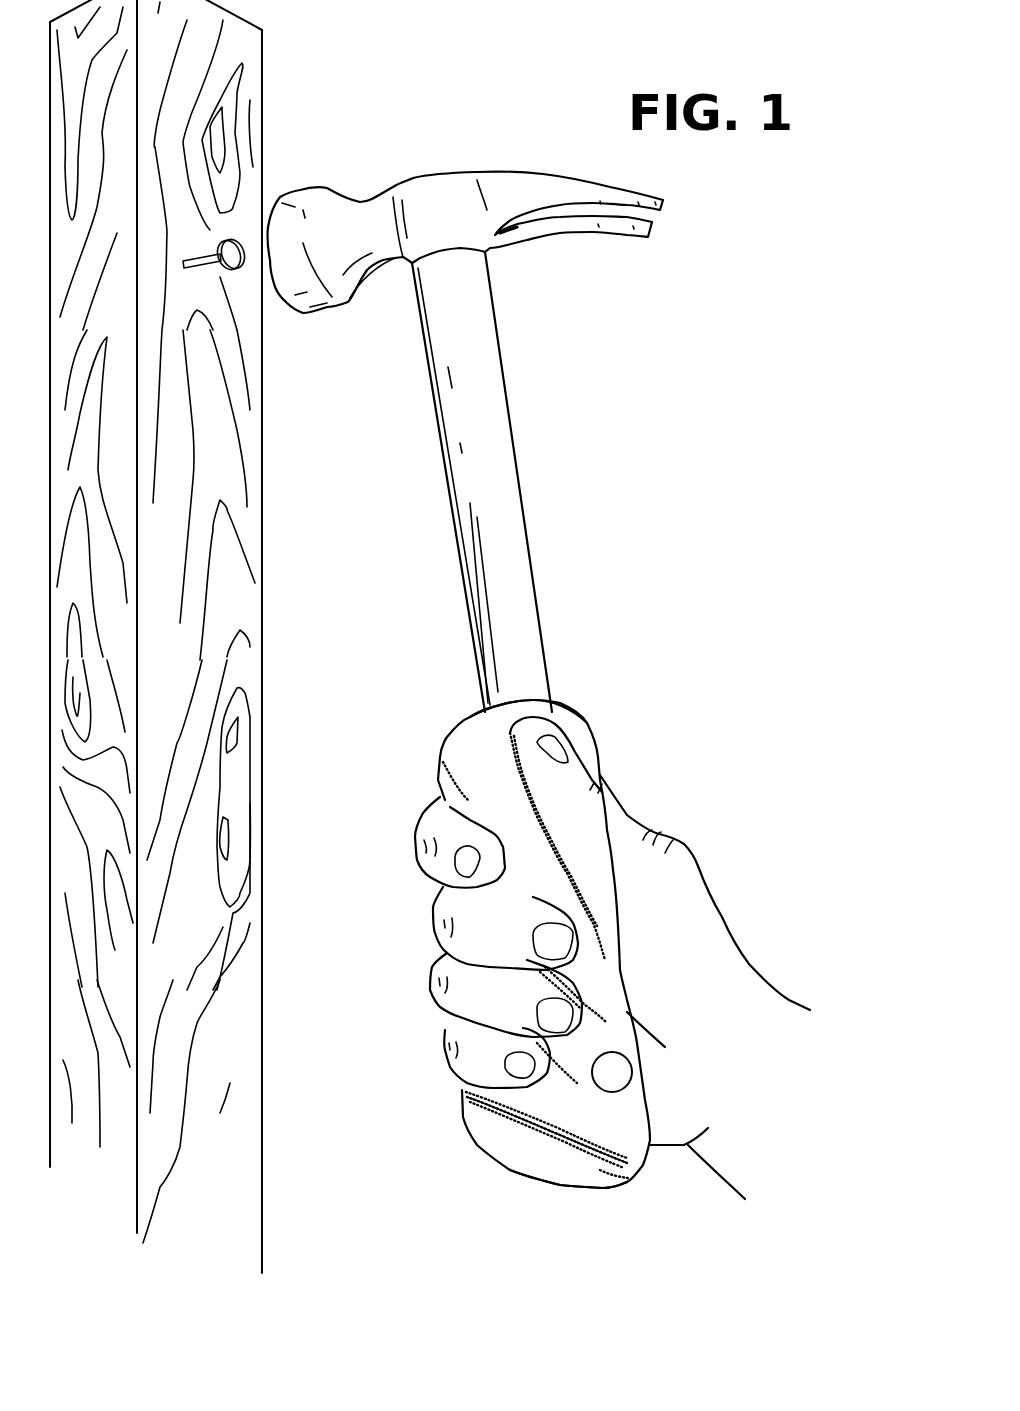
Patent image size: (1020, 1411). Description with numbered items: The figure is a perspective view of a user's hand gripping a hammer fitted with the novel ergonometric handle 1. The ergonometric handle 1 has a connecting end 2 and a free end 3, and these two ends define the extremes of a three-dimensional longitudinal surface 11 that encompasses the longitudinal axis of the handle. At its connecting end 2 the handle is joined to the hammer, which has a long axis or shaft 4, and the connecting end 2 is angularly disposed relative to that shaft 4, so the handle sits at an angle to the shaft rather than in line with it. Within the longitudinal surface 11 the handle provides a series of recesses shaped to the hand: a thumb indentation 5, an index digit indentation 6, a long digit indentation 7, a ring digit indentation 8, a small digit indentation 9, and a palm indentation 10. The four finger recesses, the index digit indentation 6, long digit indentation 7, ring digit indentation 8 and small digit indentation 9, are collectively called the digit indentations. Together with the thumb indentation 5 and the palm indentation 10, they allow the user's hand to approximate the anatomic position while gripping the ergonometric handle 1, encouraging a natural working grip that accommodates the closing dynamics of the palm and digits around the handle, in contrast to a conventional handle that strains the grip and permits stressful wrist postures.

The ergonometric handle 1 is at (437, 742).
The connecting end 2 is at (574, 698).
The free end 3 is at (609, 1189).
The shaft 4 is at (516, 458).
The thumb indentation 5 is at (602, 742).
The index digit indentation 6 is at (440, 797).
The long digit indentation 7 is at (430, 922).
The ring digit indentation 8 is at (510, 1003).
The small digit indentation 9 is at (462, 1084).
The palm indentation 10 is at (622, 976).
The longitudinal surface 11 is at (617, 1082).